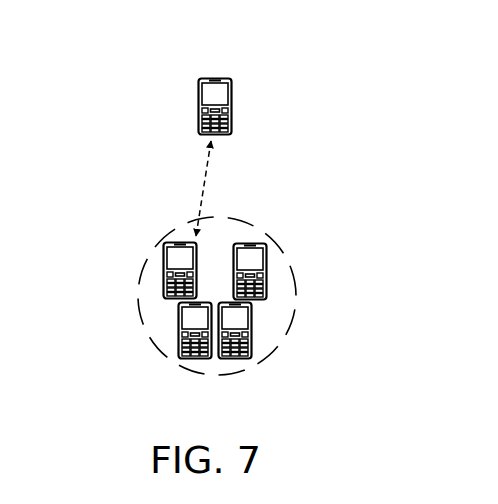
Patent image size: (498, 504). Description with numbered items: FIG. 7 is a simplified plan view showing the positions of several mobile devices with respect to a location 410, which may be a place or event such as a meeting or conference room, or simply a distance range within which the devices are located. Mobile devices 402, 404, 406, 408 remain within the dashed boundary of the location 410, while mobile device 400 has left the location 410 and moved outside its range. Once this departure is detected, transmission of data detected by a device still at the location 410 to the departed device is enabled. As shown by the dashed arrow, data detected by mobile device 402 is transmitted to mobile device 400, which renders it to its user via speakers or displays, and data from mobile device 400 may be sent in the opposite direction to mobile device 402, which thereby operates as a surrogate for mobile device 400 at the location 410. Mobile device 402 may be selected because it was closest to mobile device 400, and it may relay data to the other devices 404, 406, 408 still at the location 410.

The mobile device 400 is at (213, 78).
The mobile device 402 is at (163, 265).
The mobile device 404 is at (178, 325).
The mobile device 406 is at (252, 325).
The mobile device 408 is at (267, 265).
The location 410 is at (257, 226).